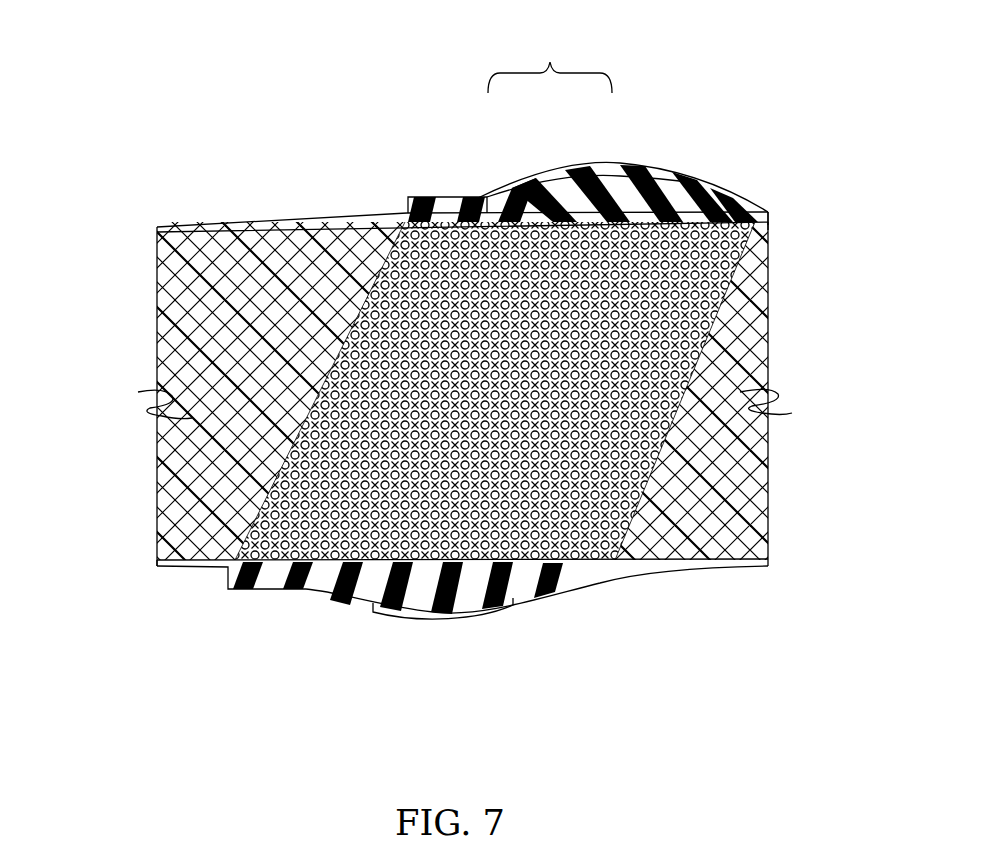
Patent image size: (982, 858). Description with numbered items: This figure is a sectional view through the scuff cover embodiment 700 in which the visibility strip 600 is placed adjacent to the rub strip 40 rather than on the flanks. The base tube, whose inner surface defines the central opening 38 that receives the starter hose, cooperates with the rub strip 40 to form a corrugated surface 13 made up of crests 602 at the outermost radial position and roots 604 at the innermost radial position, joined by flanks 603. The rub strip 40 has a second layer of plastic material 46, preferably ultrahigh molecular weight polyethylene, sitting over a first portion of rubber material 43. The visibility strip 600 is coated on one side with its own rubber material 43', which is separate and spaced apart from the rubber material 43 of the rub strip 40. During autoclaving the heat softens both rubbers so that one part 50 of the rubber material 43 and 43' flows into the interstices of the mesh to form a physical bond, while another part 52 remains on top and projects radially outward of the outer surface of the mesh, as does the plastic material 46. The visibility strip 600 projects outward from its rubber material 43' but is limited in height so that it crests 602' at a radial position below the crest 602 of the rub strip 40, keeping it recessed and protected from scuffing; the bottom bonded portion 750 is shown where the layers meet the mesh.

The absorbent article assembly 700 is at (132, 115).
The rub strip 40 is at (704, 100).
The corrugated surface 13 is at (695, 642).
The central opening 38 is at (160, 333).
The visibility strip 600 is at (470, 198).
The root 604 is at (260, 200).
The crest 602 is at (622, 152).
The crest of visibility strip 602' is at (431, 166).
The flank 603 is at (591, 115).
The plastic material 46 is at (637, 172).
The rubber material 43 is at (628, 180).
The rubber material coated on visibility strip 43' is at (556, 197).
The part of the rubber material remaining on top 52 is at (760, 205).
The part of the rubber material flowing into interstices 50 is at (580, 565).
The lower left bonded portion 750 is at (262, 567).